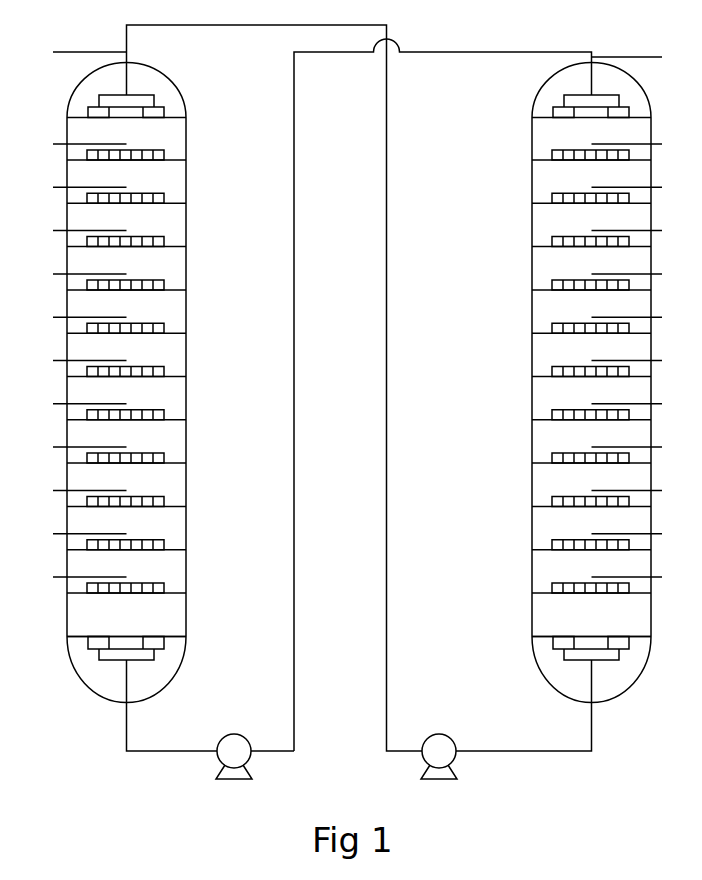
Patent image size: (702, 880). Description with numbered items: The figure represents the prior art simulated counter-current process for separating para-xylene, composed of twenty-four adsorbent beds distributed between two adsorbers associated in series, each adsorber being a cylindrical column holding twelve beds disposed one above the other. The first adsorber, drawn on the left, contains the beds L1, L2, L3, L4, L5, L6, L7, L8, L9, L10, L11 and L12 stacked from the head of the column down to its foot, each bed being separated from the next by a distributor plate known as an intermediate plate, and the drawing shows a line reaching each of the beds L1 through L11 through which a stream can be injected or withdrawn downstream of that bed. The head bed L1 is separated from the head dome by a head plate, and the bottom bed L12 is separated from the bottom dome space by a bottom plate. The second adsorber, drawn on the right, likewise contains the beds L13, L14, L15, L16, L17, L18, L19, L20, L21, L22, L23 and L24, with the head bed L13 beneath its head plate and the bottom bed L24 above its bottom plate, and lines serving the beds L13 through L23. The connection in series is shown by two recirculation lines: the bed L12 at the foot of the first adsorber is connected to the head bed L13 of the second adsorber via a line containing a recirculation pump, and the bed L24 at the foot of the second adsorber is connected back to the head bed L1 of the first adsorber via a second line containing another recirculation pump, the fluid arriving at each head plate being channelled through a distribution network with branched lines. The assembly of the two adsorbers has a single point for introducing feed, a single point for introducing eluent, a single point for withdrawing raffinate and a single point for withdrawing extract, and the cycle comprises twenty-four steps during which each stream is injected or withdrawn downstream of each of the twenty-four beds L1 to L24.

The bed L1 is at (119, 145).
The bed L2 is at (119, 188).
The bed L3 is at (119, 232).
The bed L4 is at (119, 275).
The bed L5 is at (119, 318).
The bed L6 is at (119, 362).
The bed L7 is at (119, 405).
The bed L8 is at (119, 448).
The bed L9 is at (119, 491).
The bed L10 is at (119, 535).
The bed L11 is at (119, 578).
The bed L12 is at (126, 624).
The bed L13 is at (597, 145).
The bed L14 is at (597, 188).
The bed L15 is at (597, 232).
The bed L16 is at (597, 275).
The bed L17 is at (597, 318).
The bed L18 is at (597, 362).
The bed L19 is at (597, 405).
The bed L20 is at (597, 448).
The bed L21 is at (597, 491).
The bed L22 is at (597, 535).
The bed L23 is at (597, 578).
The bed L24 is at (591, 624).